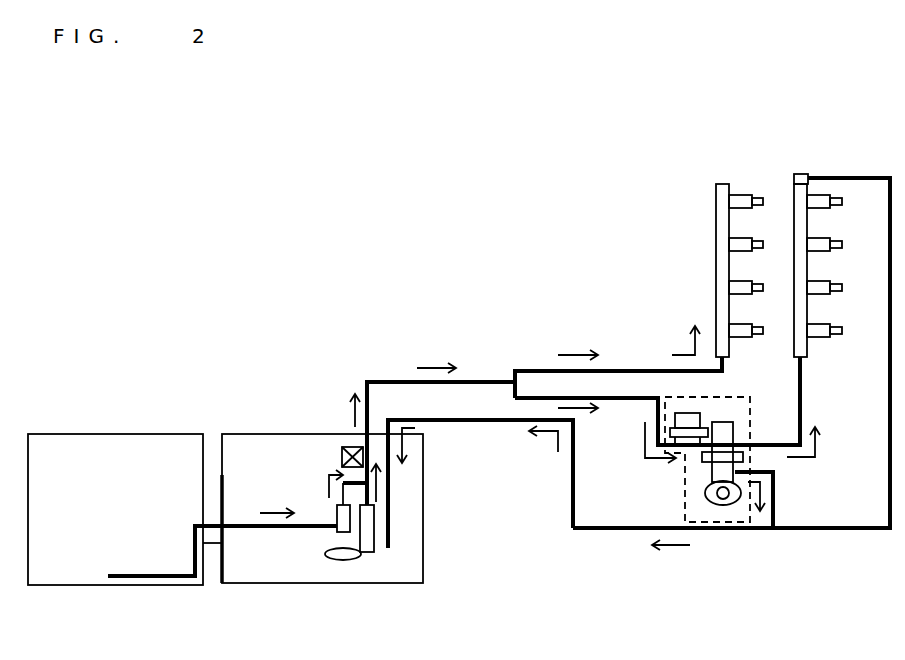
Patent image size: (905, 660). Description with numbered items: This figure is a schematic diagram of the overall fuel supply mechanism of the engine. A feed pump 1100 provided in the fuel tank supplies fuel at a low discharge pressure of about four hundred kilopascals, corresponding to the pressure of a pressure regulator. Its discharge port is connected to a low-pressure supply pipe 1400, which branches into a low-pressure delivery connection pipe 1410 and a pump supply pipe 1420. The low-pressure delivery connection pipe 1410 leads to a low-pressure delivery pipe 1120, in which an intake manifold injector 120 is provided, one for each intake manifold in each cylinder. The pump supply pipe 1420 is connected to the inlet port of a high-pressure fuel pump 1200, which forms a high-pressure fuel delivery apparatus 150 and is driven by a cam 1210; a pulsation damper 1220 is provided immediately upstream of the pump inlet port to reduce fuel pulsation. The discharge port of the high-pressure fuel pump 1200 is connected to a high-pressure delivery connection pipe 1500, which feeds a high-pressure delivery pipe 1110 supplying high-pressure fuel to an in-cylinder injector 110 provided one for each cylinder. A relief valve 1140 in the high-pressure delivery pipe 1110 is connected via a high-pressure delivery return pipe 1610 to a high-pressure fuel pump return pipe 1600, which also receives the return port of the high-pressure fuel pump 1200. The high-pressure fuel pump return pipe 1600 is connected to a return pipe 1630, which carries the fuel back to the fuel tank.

The in-cylinder injector 110 is at (818, 198).
The intake manifold injector 120 is at (742, 198).
The high-pressure fuel delivery apparatus 150 is at (716, 397).
The feed pump 1100 is at (366, 553).
The high-pressure delivery pipe 1110 is at (793, 205).
The low-pressure delivery pipe 1120 is at (714, 196).
The relief valve 1140 is at (802, 175).
The high-pressure fuel pump 1200 is at (712, 471).
The cam 1210 is at (708, 498).
The pulsation damper 1220 is at (695, 423).
The low-pressure supply pipe 1400 is at (400, 382).
The low-pressure delivery connection pipe 1410 is at (613, 371).
The pump supply pipe 1420 is at (575, 397).
The high-pressure delivery connection pipe 1500 is at (802, 415).
The high-pressure fuel pump return pipe 1600 is at (775, 490).
The high-pressure delivery return pipe 1610 is at (835, 532).
The return pipe 1630 is at (722, 532).